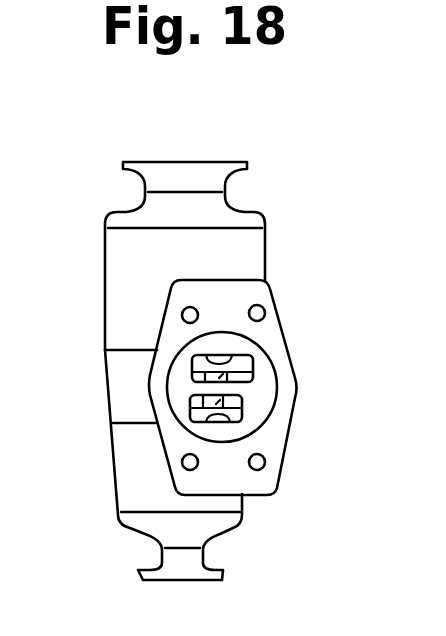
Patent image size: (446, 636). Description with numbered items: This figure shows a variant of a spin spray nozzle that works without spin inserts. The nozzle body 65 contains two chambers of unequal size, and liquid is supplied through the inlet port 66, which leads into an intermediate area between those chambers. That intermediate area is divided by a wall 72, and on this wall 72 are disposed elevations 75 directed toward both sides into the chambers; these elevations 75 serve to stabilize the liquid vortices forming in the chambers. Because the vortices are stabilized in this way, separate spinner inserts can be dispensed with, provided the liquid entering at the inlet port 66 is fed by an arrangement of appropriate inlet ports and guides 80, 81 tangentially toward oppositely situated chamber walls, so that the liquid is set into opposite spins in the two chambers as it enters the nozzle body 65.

The nozzle body 65 is at (120, 315).
The inlet port 66 is at (175, 405).
The wall 72 is at (205, 390).
The elevations 75 is at (250, 366).
The inlet port and guide 80 is at (210, 360).
The inlet port and guide 81 is at (240, 421).